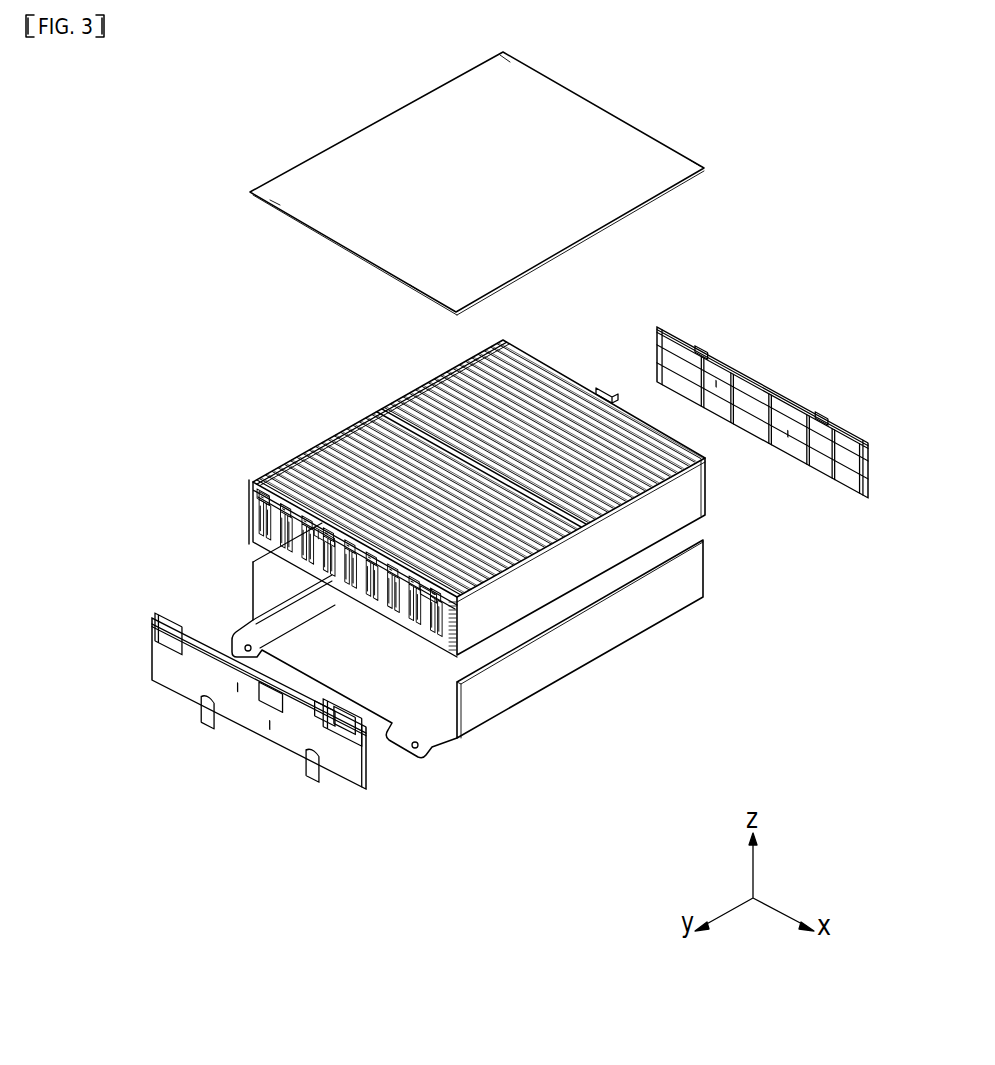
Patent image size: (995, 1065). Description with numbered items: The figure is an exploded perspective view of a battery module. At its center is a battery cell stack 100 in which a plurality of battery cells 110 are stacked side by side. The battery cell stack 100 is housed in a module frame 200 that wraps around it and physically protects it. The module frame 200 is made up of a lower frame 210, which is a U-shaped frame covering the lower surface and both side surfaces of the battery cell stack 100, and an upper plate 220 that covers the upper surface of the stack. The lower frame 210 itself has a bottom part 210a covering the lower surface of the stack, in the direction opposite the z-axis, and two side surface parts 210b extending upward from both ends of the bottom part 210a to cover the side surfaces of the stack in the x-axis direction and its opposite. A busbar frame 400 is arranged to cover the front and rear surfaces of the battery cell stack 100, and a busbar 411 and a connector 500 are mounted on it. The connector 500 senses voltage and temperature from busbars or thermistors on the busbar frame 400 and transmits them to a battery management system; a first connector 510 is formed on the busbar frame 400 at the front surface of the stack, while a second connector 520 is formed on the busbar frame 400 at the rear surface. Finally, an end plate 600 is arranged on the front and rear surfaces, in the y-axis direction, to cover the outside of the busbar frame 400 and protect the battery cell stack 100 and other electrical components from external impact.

The battery cell stack 100 is at (341, 435).
The battery cell 110 is at (678, 487).
The module frame 200 is at (818, 538).
The lower frame 210 is at (616, 752).
The bottom part 210a is at (433, 667).
The side surface part 210b is at (592, 638).
The upper plate 220 is at (453, 265).
The busbar frame 400 is at (243, 508).
The busbar 411 is at (256, 556).
The connector 500 is at (393, 448).
The first connector 510 is at (298, 556).
The second connector 520 is at (600, 388).
The end plate 600 is at (258, 728).